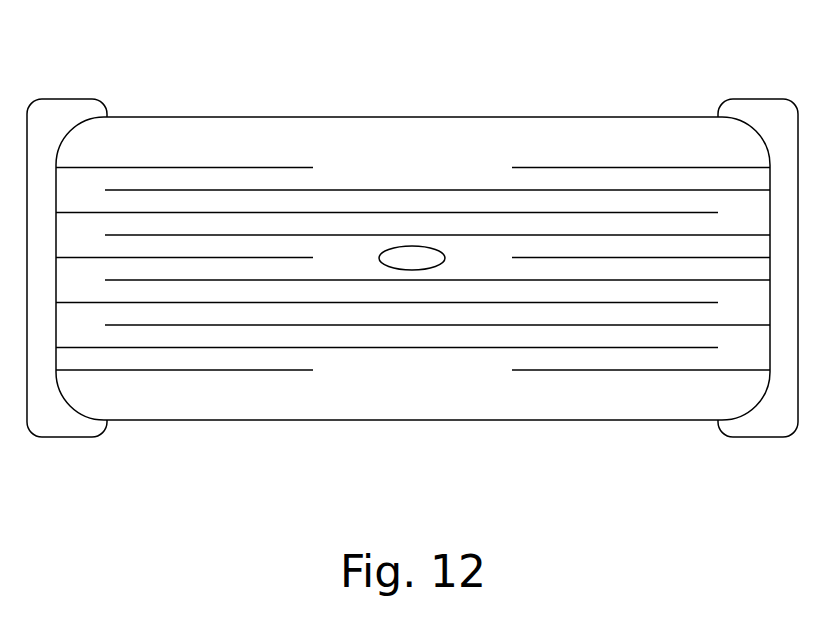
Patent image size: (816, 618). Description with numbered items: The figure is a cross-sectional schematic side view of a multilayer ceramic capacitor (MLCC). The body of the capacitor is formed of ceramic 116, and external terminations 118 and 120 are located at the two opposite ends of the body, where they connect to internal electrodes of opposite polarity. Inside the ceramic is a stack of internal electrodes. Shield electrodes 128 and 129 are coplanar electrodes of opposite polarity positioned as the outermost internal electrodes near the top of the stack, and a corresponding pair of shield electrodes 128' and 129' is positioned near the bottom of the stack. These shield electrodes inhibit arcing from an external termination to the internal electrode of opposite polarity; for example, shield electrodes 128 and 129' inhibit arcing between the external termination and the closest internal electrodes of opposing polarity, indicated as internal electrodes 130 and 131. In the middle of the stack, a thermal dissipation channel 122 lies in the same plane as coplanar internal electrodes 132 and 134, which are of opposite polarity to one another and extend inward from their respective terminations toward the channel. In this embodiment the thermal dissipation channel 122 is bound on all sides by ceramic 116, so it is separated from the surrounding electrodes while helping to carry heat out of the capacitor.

The ceramic 116 is at (442, 215).
The external termination 118 is at (52, 409).
The external termination 120 is at (769, 404).
The thermal dissipation channel 122 is at (404, 249).
The shield electrode 128 is at (184, 90).
The shield electrode 128' is at (184, 436).
The shield electrode 129 is at (641, 94).
The shield electrode 129' is at (641, 443).
The internal electrode 130 is at (341, 181).
The internal electrode 131 is at (371, 340).
The internal electrode 132 is at (109, 248).
The internal electrode 134 is at (655, 249).